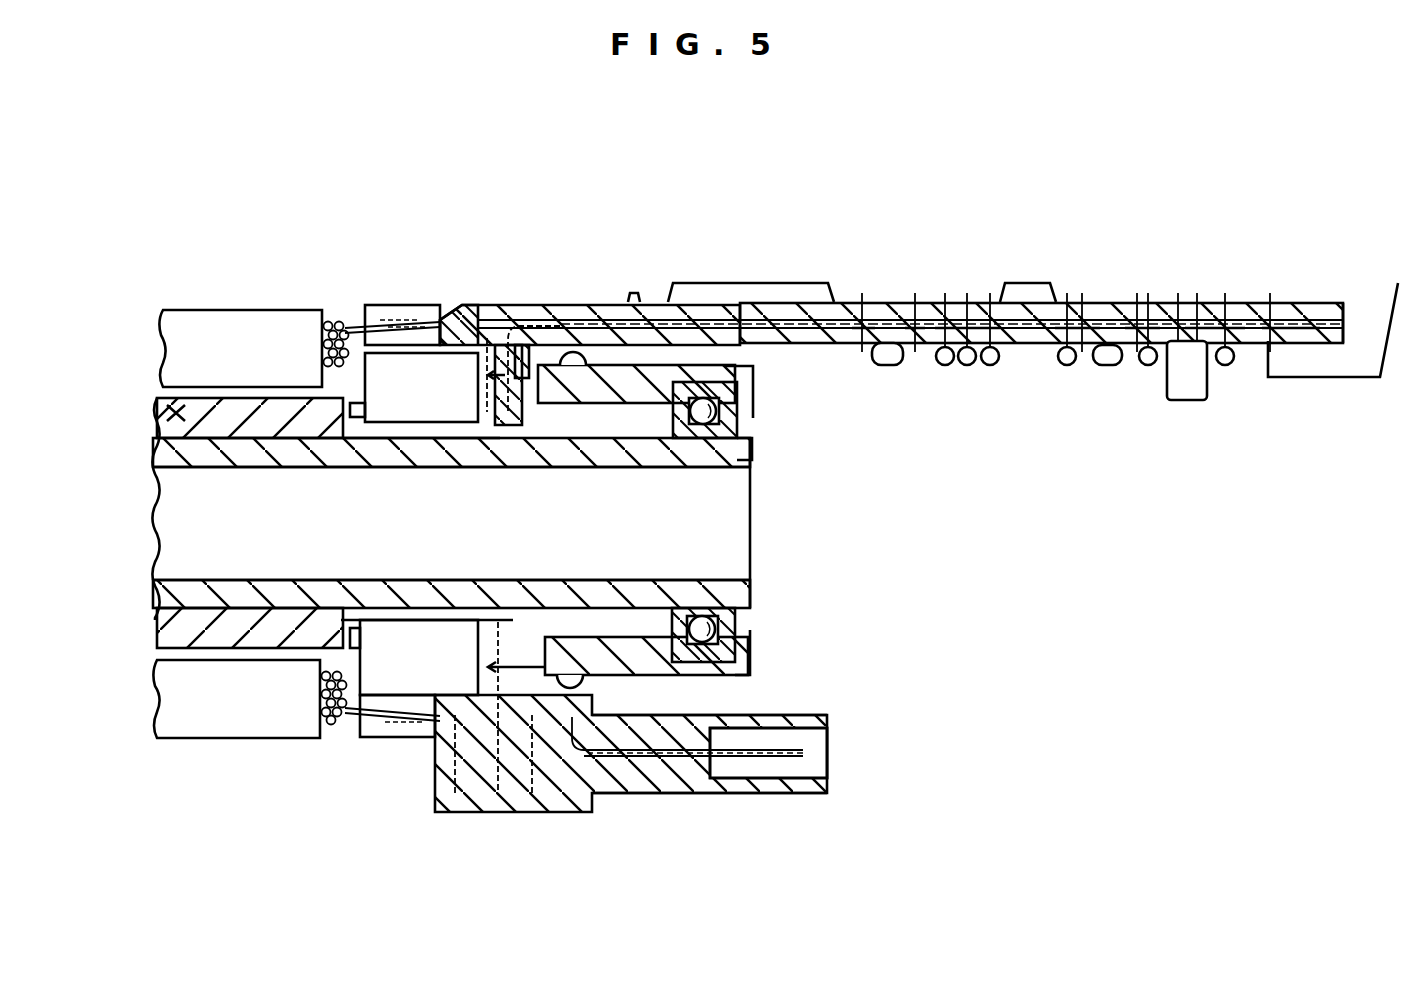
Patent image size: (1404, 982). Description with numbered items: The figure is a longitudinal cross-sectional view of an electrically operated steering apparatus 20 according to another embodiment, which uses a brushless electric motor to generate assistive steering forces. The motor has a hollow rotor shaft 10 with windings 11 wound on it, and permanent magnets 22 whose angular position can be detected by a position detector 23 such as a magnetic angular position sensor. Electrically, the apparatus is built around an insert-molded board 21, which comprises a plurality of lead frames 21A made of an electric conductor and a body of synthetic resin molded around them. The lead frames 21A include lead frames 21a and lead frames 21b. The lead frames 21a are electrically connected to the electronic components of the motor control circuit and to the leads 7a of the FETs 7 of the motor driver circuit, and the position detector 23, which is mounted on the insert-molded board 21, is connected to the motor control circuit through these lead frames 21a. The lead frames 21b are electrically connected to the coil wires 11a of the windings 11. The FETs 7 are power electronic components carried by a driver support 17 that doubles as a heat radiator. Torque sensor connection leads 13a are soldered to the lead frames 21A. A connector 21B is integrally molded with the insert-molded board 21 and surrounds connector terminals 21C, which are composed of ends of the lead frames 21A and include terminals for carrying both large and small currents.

The FET 7 is at (603, 364).
The lead of FET 7a is at (522, 318).
The rotor shaft 10 is at (200, 715).
The windings 11 is at (332, 318).
The coil wire 11a is at (357, 318).
The torque sensor connection lead 13a is at (1322, 380).
The driver support 17 is at (725, 358).
The electrically operated steering apparatus 20 is at (998, 203).
The insert-molded board 21 is at (620, 300).
The lead frame 21a is at (743, 315).
The lead frame 21b is at (480, 307).
The lead frame 21A is at (665, 757).
The connector 21B is at (808, 708).
The connector terminal 21C is at (812, 754).
The permanent magnet 22 is at (175, 422).
The position detector 23 is at (403, 667).